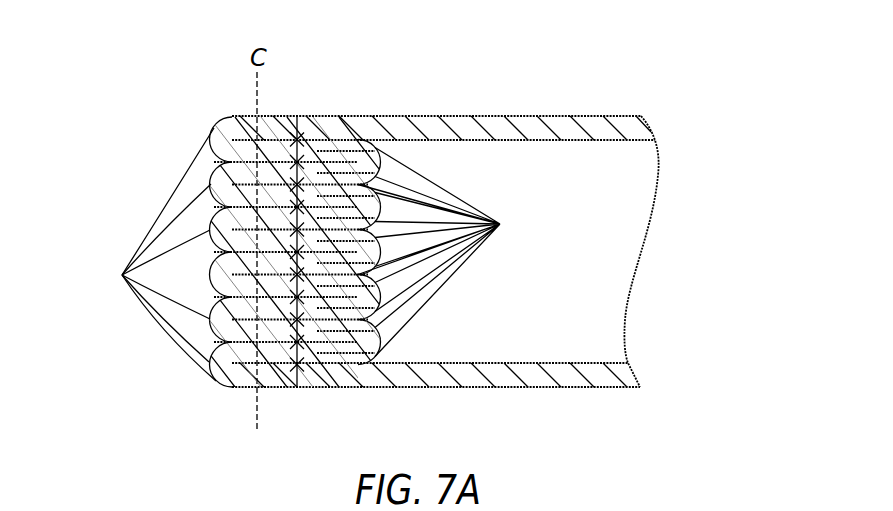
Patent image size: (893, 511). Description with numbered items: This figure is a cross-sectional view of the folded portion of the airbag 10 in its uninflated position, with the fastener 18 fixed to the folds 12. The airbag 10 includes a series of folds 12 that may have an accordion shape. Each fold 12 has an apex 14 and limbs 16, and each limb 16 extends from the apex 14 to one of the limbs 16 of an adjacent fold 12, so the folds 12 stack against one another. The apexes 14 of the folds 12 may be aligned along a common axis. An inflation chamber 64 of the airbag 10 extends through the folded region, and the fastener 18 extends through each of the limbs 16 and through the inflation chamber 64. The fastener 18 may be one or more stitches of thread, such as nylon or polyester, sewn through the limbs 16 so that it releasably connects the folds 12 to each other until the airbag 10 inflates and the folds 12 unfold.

The airbag 10 is at (547, 114).
The fold 12 is at (170, 123).
The apex 14 is at (209, 275).
The limb 16 is at (500, 224).
The fastener 18 is at (300, 116).
The inflation chamber 64 is at (627, 165).